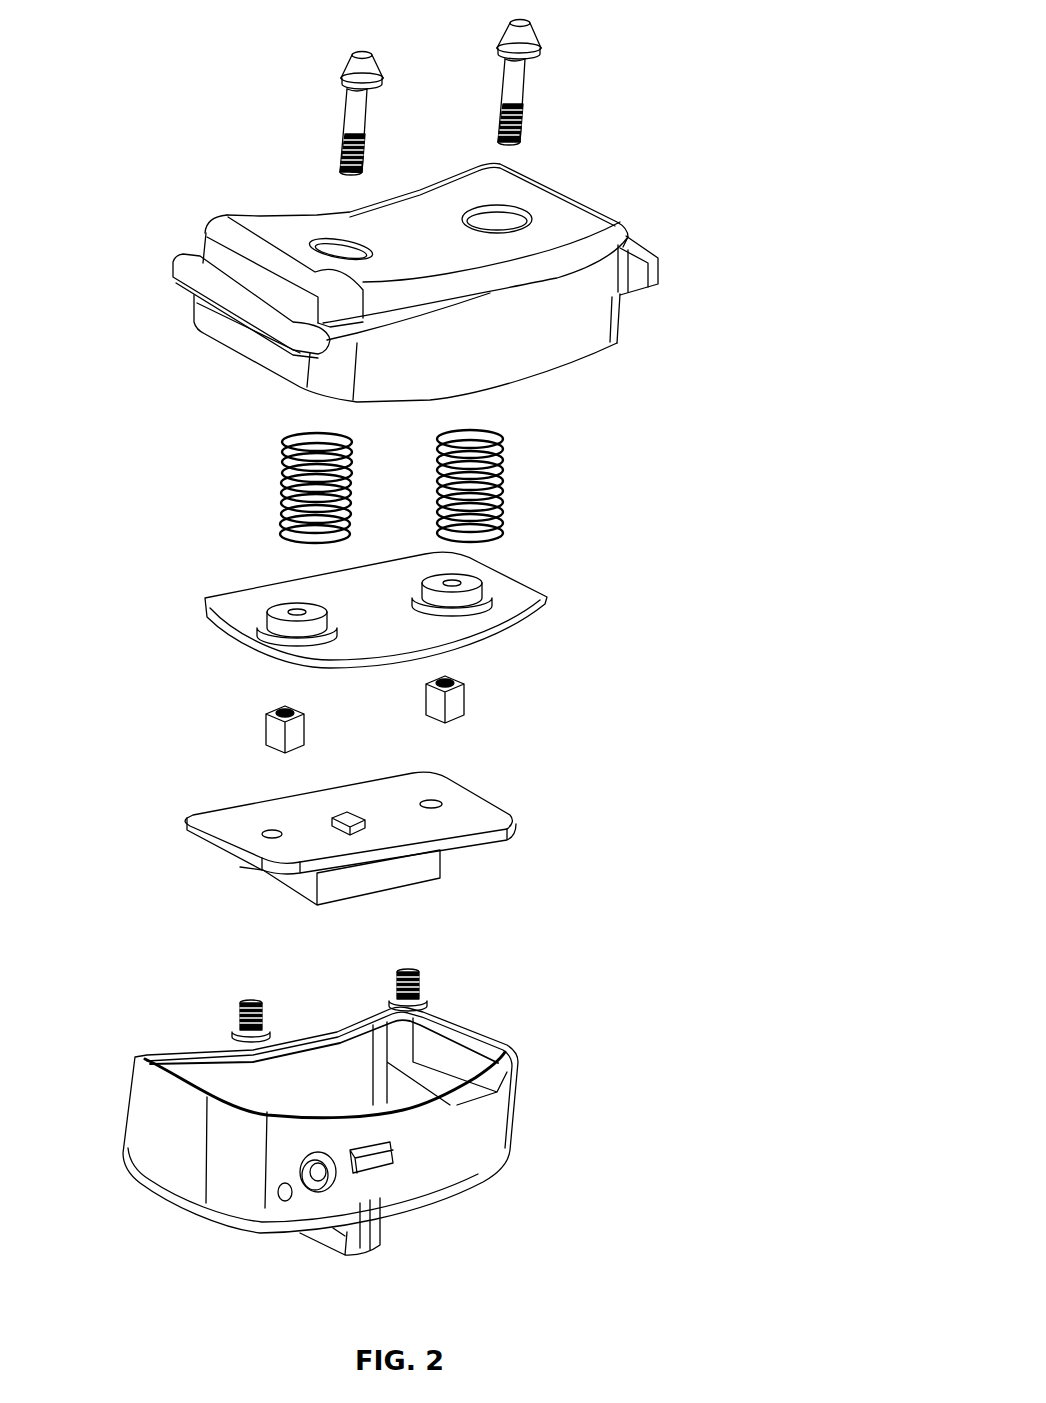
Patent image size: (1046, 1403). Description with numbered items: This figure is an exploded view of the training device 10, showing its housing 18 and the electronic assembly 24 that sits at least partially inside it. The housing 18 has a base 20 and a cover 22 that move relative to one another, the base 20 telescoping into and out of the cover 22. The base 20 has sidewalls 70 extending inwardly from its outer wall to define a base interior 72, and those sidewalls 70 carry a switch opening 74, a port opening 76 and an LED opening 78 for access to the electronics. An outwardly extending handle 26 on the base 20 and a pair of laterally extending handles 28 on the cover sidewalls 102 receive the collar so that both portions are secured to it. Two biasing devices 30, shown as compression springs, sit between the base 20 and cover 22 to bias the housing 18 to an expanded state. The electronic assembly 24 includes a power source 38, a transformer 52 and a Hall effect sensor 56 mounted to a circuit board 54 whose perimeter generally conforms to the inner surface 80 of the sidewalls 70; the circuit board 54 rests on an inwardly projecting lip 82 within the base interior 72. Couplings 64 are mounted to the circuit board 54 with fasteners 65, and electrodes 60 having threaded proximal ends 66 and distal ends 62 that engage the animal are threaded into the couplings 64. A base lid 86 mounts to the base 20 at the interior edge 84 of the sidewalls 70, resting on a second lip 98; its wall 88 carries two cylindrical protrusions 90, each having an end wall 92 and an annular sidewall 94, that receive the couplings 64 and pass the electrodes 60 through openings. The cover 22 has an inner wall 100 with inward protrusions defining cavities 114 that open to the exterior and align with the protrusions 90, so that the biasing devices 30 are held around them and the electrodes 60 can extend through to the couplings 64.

The training device 10 is at (204, 33).
The housing 18 is at (422, 295).
The base 20 is at (324, 1131).
The cover 22 is at (411, 304).
The electronic assembly 24 is at (531, 757).
The handle 26 is at (350, 1258).
The handles 28 is at (186, 285).
The biasing devices 30 is at (282, 490).
The power source 38 is at (363, 888).
The transformer 52 is at (300, 893).
The circuit board 54 is at (371, 803).
The Hall effect sensor 56 is at (348, 812).
The electrodes 60 is at (476, 90).
The distal ends 62 is at (386, 63).
The couplings 64 is at (264, 730).
The fasteners 65 is at (270, 1012).
The proximal ends 66 is at (364, 155).
The sidewalls 70 is at (147, 1090).
The base interior 72 is at (440, 1047).
The switch opening 74 is at (322, 1193).
The port opening 76 is at (397, 1158).
The LED opening 78 is at (286, 1202).
The inner surface 80 is at (215, 1082).
The lip 82 is at (453, 1080).
The interior edge 84 is at (162, 1058).
The base lid 86 is at (413, 611).
The wall 88 is at (515, 613).
The protrusions 90 is at (398, 611).
The end wall 92 is at (312, 612).
The annular sidewall 94 is at (270, 630).
The second lip 98 is at (350, 1035).
The inner wall 100 is at (278, 227).
The sidewalls 102 is at (510, 360).
The cavity 114 is at (338, 246).